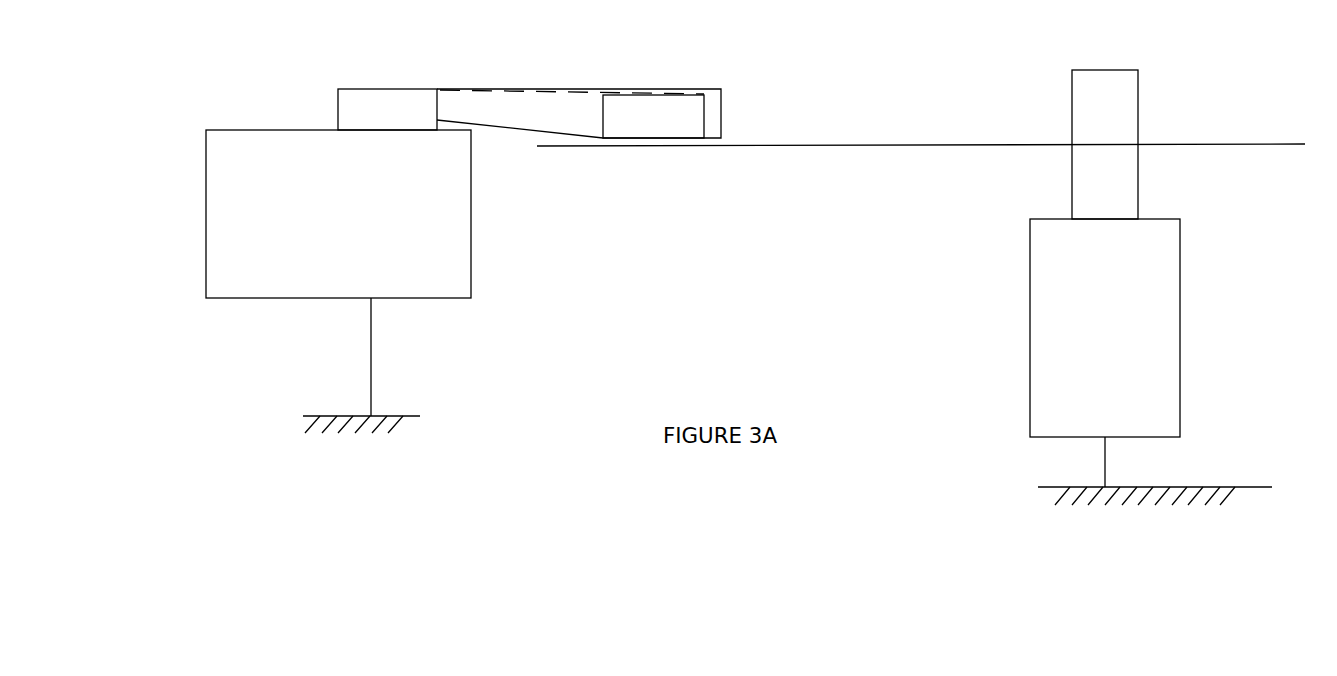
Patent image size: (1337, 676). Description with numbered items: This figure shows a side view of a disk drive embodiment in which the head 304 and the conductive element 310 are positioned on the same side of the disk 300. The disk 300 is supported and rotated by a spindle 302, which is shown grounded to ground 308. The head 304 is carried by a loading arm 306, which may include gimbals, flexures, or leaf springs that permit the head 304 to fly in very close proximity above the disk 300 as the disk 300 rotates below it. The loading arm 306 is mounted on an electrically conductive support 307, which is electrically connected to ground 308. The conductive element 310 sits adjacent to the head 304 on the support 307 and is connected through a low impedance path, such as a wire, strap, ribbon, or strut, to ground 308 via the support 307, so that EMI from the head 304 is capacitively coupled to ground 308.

The disk 300 is at (1172, 143).
The spindle 302 is at (1172, 268).
The head 304 is at (690, 90).
The loading arm 306 is at (557, 89).
The electrically conductive support 307 is at (239, 147).
The ground 308 is at (403, 416).
The conductive element 310 is at (453, 105).